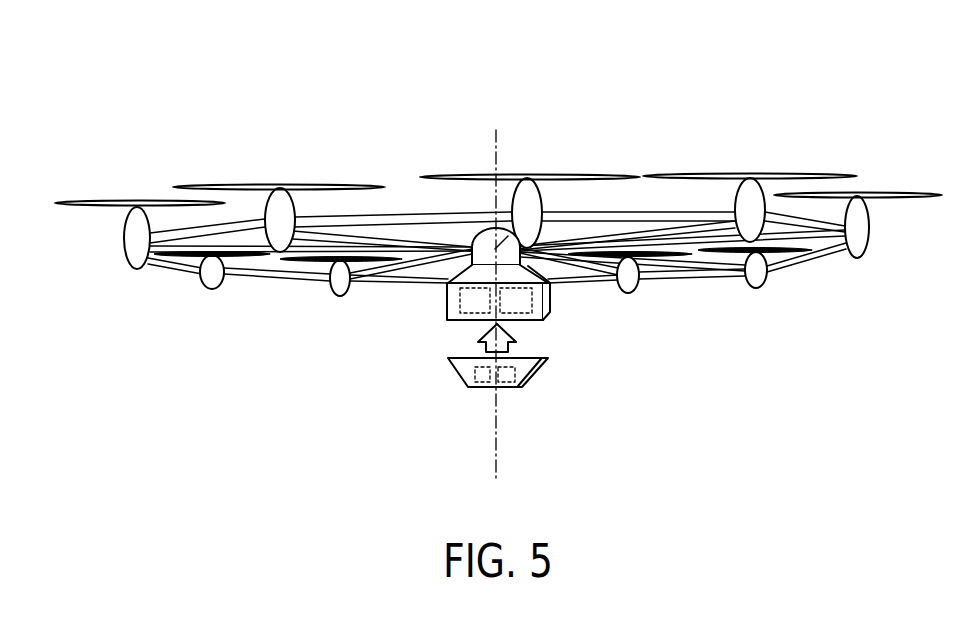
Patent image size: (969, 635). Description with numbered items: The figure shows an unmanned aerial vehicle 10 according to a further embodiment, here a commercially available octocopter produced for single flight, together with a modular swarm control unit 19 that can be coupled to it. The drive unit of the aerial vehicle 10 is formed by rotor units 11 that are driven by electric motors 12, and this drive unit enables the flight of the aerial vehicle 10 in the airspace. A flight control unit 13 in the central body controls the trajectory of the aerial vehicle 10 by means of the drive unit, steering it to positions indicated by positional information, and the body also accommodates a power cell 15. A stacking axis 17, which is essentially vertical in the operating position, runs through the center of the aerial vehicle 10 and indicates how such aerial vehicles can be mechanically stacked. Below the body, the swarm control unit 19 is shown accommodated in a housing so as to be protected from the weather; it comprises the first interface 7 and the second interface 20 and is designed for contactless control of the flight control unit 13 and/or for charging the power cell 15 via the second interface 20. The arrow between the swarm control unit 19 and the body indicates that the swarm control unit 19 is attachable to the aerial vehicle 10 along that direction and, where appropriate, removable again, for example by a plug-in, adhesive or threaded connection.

The unmanned aerial vehicle 10 is at (498, 245).
The rotor unit 11 is at (245, 187).
The electric motor 12 is at (217, 270).
The flight control unit 13 is at (462, 312).
The power cell 15 is at (547, 310).
The stacking axis 17 is at (495, 153).
The modular swarm control unit 19 is at (460, 368).
The first interface 7 is at (478, 376).
The second interface 20 is at (515, 377).